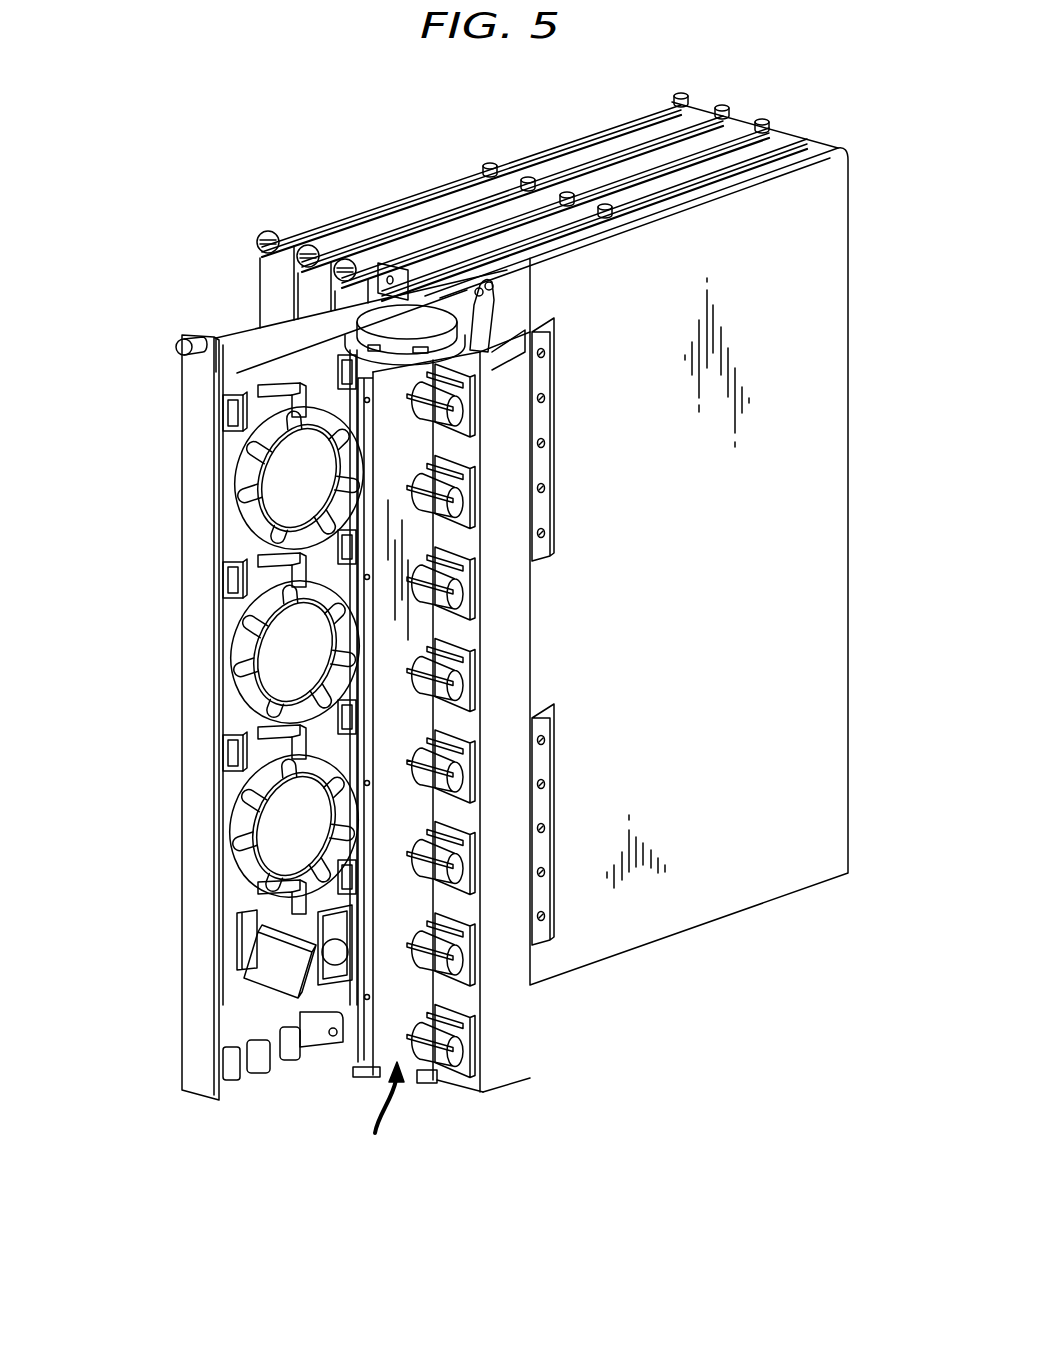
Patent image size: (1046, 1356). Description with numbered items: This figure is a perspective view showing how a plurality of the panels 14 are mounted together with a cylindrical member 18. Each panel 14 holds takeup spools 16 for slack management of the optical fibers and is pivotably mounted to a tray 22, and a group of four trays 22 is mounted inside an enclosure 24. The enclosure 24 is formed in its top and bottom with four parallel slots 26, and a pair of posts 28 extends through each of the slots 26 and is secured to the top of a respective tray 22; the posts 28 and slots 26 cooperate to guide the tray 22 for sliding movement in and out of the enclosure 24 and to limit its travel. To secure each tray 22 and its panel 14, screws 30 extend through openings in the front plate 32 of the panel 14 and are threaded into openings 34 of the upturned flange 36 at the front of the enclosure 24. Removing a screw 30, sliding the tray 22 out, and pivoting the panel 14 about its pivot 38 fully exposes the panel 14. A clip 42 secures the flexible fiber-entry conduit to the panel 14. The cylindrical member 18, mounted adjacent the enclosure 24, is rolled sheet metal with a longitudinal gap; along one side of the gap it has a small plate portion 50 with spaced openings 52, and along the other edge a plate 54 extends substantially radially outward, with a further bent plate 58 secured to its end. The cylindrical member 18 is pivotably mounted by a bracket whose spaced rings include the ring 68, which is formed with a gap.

The panel 14 is at (233, 998).
The takeup spools 16 is at (238, 823).
The cylindrical member 18 is at (376, 1117).
The tray 22 is at (248, 350).
The enclosure 24 is at (810, 813).
The slots 26 is at (690, 100).
The posts 28 is at (565, 193).
The screws 30 is at (305, 245).
The front plate 32 is at (192, 473).
The openings 34 is at (380, 283).
The upturned flange 36 is at (495, 290).
The pivot 38 is at (333, 1036).
The clip 42 is at (280, 970).
The plate portion 50 is at (367, 1057).
The openings 52 is at (373, 997).
The plate 54 is at (450, 1083).
The bent plate 58 is at (513, 1067).
The ring 68 is at (432, 1083).